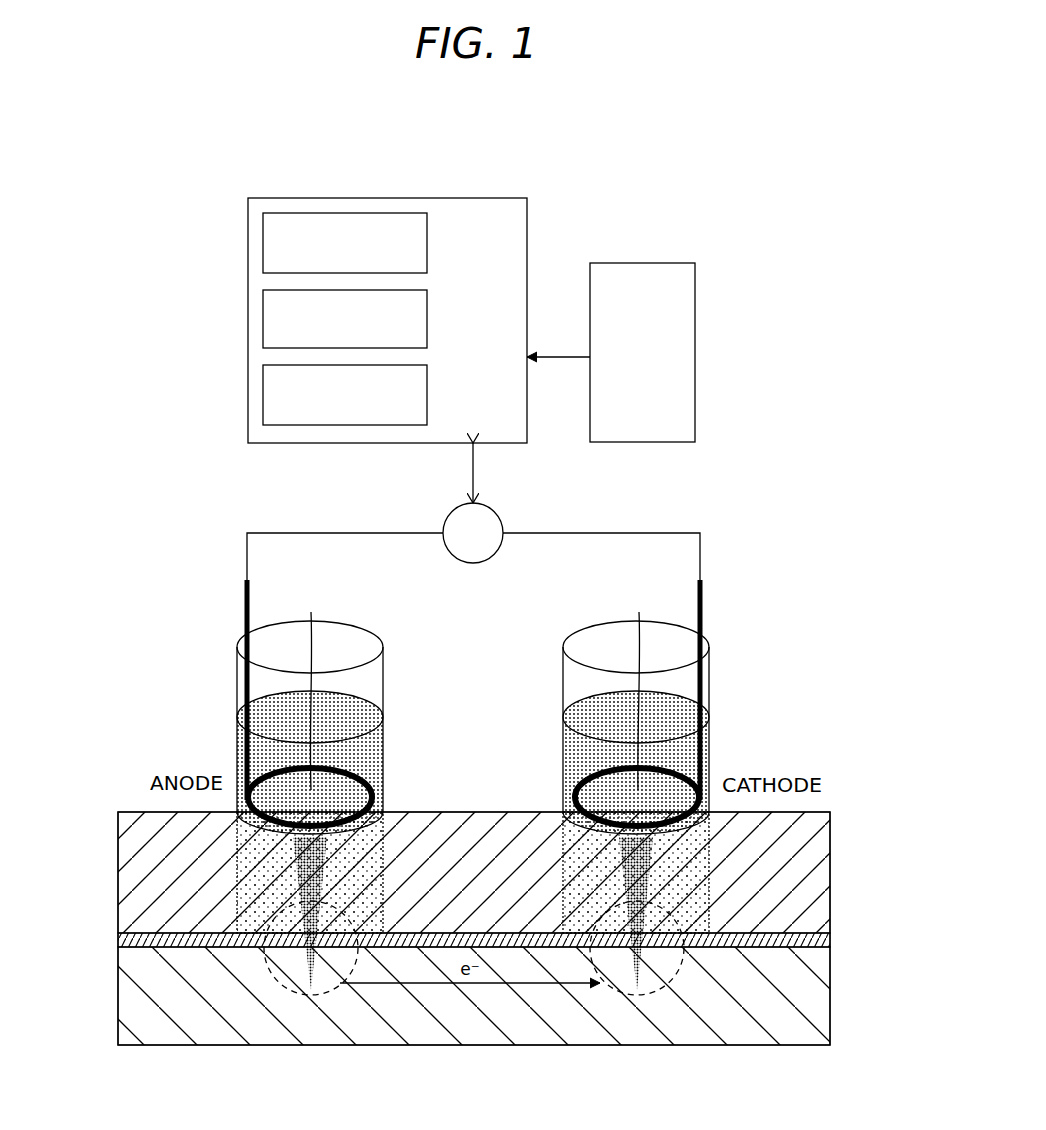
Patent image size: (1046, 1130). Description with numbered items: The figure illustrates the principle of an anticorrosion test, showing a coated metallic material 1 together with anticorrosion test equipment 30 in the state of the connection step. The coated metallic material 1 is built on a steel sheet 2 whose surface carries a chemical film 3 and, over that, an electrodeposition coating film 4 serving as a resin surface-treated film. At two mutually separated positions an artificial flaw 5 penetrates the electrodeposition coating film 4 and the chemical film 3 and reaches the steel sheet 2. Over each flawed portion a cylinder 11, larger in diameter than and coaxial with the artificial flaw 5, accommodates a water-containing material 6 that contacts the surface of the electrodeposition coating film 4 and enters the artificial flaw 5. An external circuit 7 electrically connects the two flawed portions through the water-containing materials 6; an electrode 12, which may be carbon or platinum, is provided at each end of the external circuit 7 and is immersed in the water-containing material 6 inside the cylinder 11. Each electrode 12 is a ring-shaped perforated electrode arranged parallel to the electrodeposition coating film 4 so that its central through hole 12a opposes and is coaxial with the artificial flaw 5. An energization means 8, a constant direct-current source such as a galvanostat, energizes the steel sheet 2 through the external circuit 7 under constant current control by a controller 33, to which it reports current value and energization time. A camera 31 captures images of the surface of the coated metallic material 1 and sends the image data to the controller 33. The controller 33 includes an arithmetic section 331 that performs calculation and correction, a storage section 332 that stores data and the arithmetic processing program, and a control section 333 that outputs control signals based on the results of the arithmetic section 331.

The coated metallic material 1 is at (848, 750).
The steel sheet 2 is at (140, 1003).
The chemical film 3 is at (130, 940).
The electrodeposition coating film 4 is at (140, 832).
The artificial flaw 5 is at (205, 877).
The water-containing material 6 is at (350, 708).
The external circuit 7 is at (608, 532).
The energization means 8 is at (473, 563).
The cylinder 11 is at (354, 622).
The electrode 12 is at (475, 786).
The through hole 12a is at (363, 790).
The anticorrosion test equipment 30 is at (710, 205).
The camera 31 is at (683, 340).
The controller 33 is at (445, 213).
The arithmetic section 331 is at (428, 250).
The storage section 332 is at (428, 319).
The control section 333 is at (428, 395).